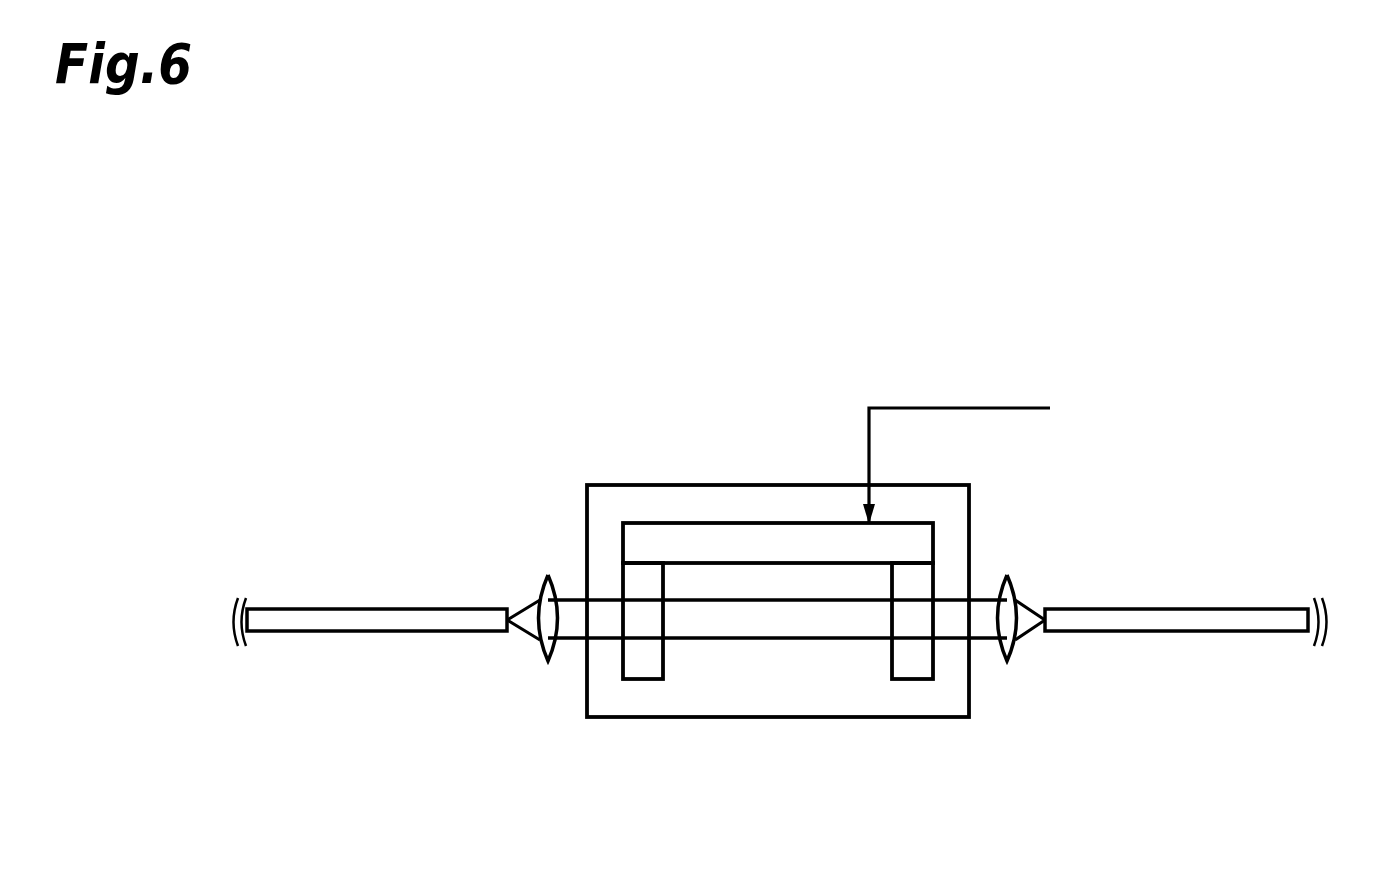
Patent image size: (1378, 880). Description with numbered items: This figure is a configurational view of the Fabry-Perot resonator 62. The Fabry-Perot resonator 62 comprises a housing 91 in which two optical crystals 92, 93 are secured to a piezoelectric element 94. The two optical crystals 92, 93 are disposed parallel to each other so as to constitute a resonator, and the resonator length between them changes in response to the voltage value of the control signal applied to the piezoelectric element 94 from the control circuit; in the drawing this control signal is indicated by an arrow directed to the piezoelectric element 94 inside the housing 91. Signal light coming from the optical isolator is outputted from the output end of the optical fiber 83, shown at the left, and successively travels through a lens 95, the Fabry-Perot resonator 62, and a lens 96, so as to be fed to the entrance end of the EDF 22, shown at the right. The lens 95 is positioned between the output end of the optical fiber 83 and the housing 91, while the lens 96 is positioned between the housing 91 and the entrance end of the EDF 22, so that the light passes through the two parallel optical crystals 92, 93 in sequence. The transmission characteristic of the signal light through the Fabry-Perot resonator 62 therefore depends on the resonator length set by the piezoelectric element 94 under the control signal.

The Fabry-Perot resonator 62 is at (783, 467).
The housing 91 is at (642, 485).
The piezoelectric element 94 is at (705, 535).
The optical crystal 92 is at (640, 679).
The optical crystal 93 is at (913, 679).
The lens 95 is at (548, 660).
The lens 96 is at (1007, 660).
The optical fiber 83 is at (348, 631).
The EDF 22 is at (1183, 631).